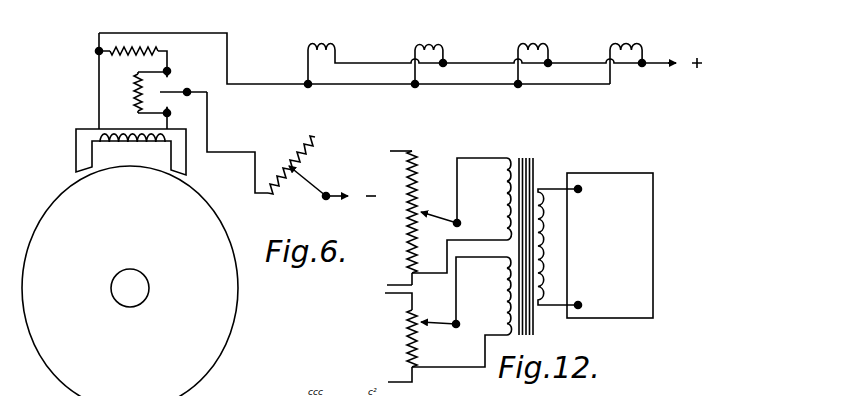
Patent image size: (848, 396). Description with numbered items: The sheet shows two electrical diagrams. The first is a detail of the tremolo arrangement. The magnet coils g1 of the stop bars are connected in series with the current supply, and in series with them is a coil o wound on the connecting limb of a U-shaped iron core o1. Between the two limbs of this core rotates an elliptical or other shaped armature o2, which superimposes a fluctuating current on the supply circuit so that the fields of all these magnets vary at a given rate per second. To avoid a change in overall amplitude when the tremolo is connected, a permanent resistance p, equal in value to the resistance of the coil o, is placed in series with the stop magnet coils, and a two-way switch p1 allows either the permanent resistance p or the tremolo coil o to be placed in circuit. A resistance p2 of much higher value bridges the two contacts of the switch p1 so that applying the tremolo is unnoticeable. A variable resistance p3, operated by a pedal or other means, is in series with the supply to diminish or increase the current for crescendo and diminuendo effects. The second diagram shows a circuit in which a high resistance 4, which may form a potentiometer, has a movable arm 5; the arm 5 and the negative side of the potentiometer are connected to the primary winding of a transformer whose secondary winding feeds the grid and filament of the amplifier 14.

In FIG. 6, the permanent resistance p is at (140, 48).
In FIG. 6, the two-way switch p1 is at (177, 92).
In FIG. 6, the resistance p2 is at (134, 90).
In FIG. 6, the variable resistance p3 is at (300, 143).
In FIG. 6, the tremolo coil o is at (120, 128).
In FIG. 6, the U-shaped iron core o1 is at (85, 128).
In FIG. 6, the armature o2 is at (130, 281).
In FIG. 6, the magnet coils g1 is at (339, 44).
In FIG. 12, the high resistance 4 is at (416, 186).
In FIG. 12, the movable arm 5 is at (436, 218).
In FIG. 12, the amplifier 14 is at (645, 247).